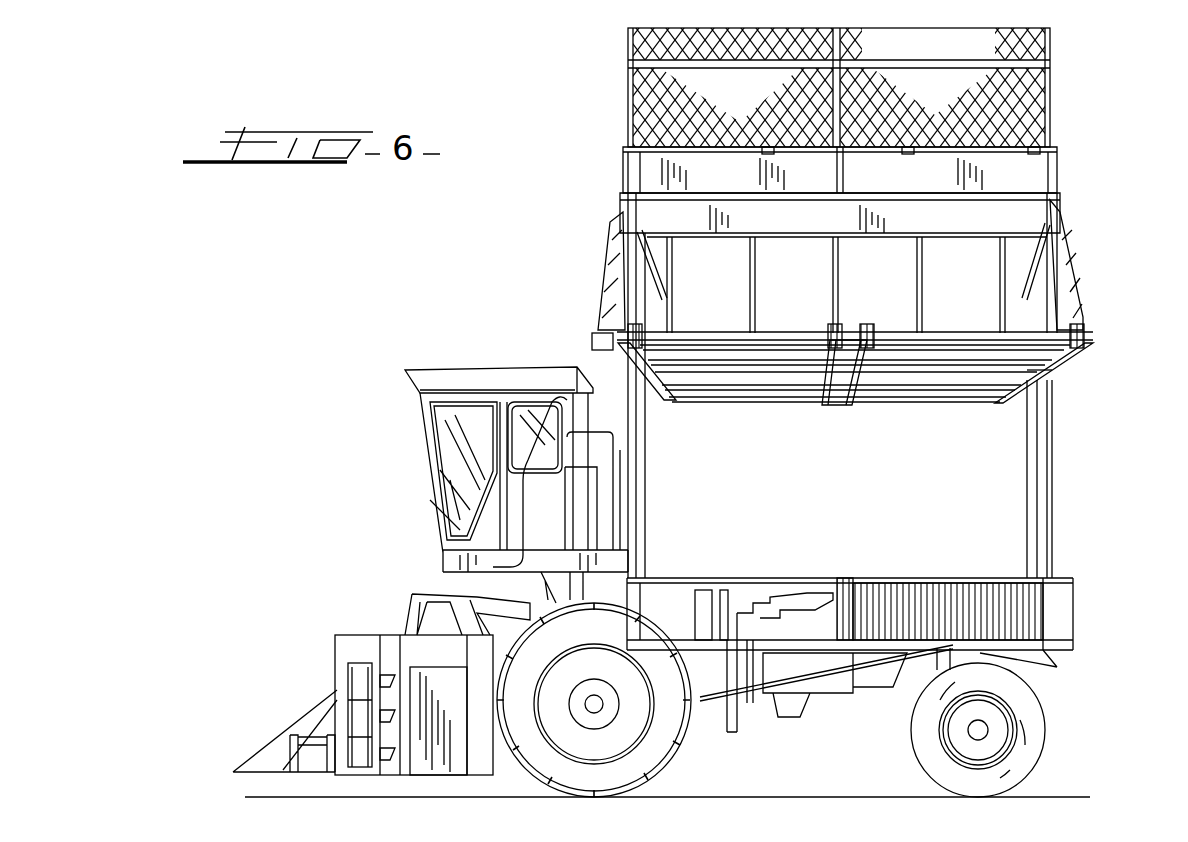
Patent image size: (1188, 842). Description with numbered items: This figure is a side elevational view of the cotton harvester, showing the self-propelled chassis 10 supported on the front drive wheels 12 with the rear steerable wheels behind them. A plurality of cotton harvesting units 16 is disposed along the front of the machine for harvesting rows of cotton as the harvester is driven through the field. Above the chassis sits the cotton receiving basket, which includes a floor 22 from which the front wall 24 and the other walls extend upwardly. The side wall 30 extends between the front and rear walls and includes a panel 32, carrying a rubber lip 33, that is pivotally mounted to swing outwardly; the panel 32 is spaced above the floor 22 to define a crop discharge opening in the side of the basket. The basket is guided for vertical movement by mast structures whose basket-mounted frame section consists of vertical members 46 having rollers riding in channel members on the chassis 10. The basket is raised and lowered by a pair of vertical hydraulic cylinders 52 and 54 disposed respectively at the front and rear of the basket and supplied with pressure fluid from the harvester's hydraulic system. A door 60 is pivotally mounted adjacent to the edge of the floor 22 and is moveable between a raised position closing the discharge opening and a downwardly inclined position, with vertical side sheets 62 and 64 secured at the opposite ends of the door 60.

The self-propelled chassis 10 is at (1030, 637).
The front drive wheels 12 is at (712, 760).
The cotton harvesting units 16 is at (427, 750).
The floor 22 is at (990, 345).
The front wall 24 is at (640, 290).
The side wall 30 is at (943, 101).
The panel 32 is at (640, 172).
The rubber lip 33 is at (1020, 212).
The vertical members 46 is at (1023, 402).
The hydraulic cylinder 52 is at (634, 447).
The hydraulic cylinder 54 is at (1052, 503).
The door 60 is at (947, 333).
The side sheet 62 is at (603, 303).
The side sheet 64 is at (1077, 288).